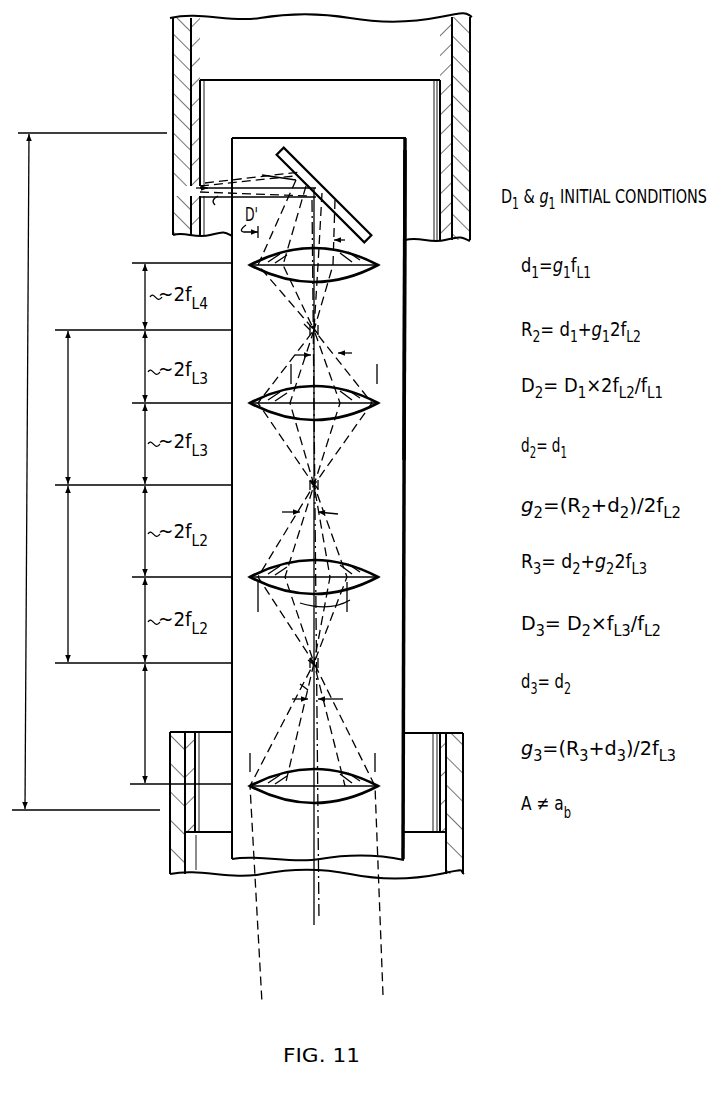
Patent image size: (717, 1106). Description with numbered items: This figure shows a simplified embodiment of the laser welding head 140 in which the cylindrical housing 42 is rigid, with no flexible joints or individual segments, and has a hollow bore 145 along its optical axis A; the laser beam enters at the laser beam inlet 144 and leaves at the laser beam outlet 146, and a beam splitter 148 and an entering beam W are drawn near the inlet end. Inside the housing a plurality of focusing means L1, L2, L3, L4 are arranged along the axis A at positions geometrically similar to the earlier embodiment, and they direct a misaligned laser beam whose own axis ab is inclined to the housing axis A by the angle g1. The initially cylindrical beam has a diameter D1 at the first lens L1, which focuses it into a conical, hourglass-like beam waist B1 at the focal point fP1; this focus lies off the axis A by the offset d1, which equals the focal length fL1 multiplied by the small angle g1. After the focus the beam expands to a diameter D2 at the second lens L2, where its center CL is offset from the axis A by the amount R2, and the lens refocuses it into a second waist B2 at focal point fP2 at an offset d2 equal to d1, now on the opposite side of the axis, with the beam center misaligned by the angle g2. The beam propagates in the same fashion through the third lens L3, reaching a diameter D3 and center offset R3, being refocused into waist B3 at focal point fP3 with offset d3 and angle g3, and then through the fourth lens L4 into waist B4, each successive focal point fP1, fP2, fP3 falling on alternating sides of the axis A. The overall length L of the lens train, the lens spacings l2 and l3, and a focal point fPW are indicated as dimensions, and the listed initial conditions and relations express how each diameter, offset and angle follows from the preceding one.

The laser welding head 140 is at (361, 135).
The bore 145 is at (406, 173).
The cylindrical housing 42 is at (438, 213).
The beam splitter 148 is at (328, 183).
The laser beam outlet 146 is at (220, 238).
The laser beam inlet 144 is at (243, 849).
The first focusing means L1 is at (350, 771).
The second focusing means L2 is at (368, 576).
The third focusing means L3 is at (379, 402).
The fourth focusing means L4 is at (380, 262).
The input light beam W is at (200, 180).
The beam waist B1 is at (308, 662).
The beam waist B2 is at (321, 491).
The beam waist B3 is at (320, 327).
The beam waist B4 is at (262, 175).
The optical axis A is at (310, 608).
The beam diameter D1 is at (395, 763).
The beam diameter D2 is at (240, 604).
The beam diameter D3 is at (398, 374).
The focal point offset d1 is at (337, 663).
The focal point offset d2 is at (340, 485).
The focal point offset d3 is at (337, 330).
The beam center offset R2 is at (330, 548).
The beam center offset R3 is at (352, 434).
The beam incidence angle g1 is at (326, 701).
The beam misalignment angle g2 is at (320, 527).
The beam misalignment angle g3 is at (332, 358).
The focal point fP1 is at (310, 663).
The focal point fP2 is at (312, 484).
The focal point fP3 is at (306, 327).
The focal point of input beam fPW is at (215, 205).
The focal length fL1 is at (147, 701).
The laser beam axis ab is at (303, 687).
The beam center CL is at (285, 411).
The overall length L is at (89, 471).
The length l2 is at (143, 574).
The length l3 is at (143, 407).